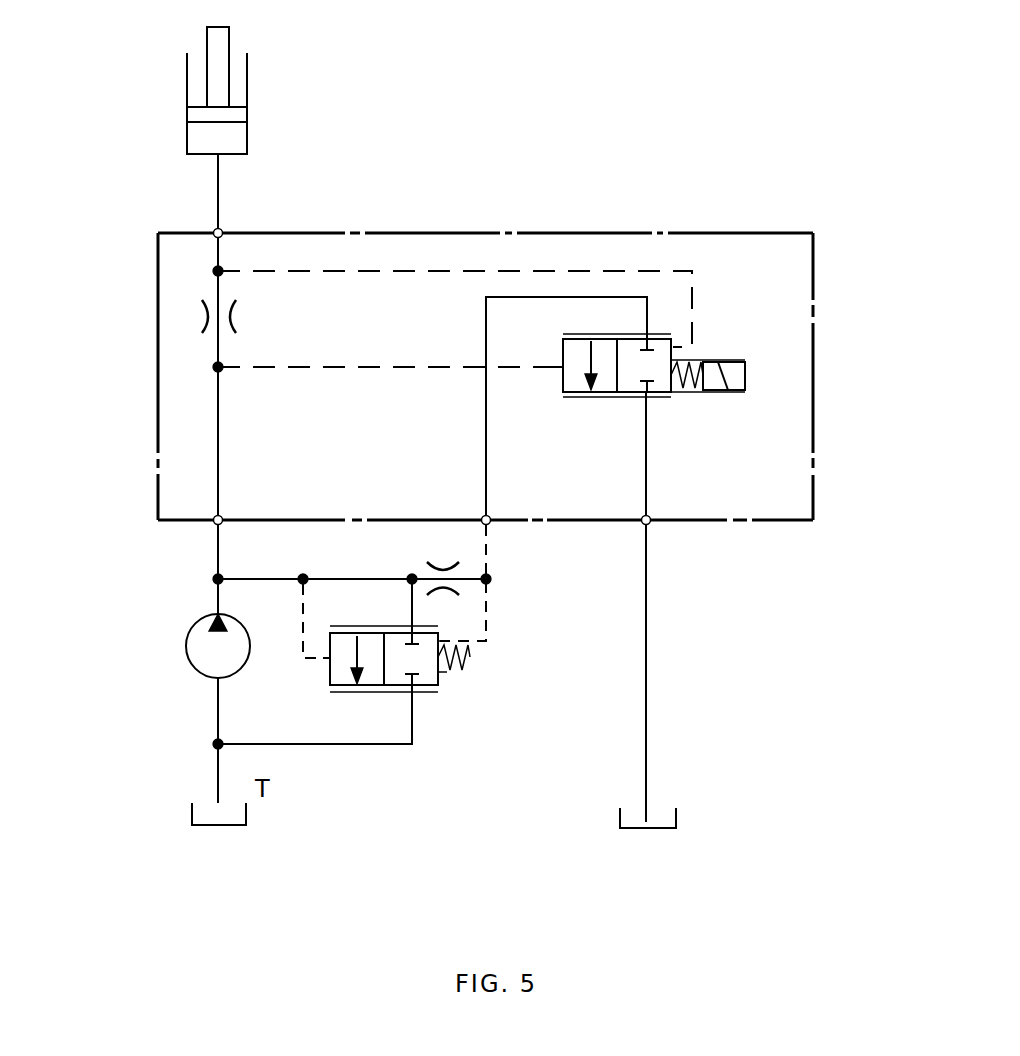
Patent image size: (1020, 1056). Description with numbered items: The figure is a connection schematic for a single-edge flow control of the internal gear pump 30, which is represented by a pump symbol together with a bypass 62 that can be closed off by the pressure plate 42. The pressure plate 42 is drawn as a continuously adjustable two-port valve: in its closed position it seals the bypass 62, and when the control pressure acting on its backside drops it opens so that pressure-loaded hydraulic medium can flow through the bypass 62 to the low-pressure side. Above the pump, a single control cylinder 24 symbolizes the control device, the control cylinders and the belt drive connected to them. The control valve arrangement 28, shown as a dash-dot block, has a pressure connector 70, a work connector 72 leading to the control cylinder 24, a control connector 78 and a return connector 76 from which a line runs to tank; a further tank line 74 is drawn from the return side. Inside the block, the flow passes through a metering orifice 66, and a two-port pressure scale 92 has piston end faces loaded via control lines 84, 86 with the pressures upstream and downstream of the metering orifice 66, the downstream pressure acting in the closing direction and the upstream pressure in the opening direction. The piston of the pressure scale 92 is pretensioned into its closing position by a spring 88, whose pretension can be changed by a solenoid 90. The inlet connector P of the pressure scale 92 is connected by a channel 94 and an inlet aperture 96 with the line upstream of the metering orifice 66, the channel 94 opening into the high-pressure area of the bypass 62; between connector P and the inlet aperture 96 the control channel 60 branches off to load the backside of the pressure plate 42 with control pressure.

The control cylinder 24 is at (248, 73).
The control valve arrangement 28 is at (656, 232).
The internal gear pump 30 is at (186, 645).
The pressure plate 42 is at (470, 646).
The control channel 60 is at (487, 598).
The bypass 62 is at (345, 745).
The metering orifice 66 is at (207, 318).
The pressure connector 70 is at (212, 524).
The work connector 72 is at (222, 231).
The tank line 74 is at (646, 648).
The return connector 76 is at (648, 524).
The control connector 78 is at (490, 524).
The control line 84 is at (388, 271).
The control line 86 is at (338, 367).
The spring 88 is at (683, 380).
The solenoid 90 is at (747, 372).
The pressure scale 92 is at (655, 375).
The channel 94 is at (596, 297).
The inlet aperture 96 is at (440, 587).